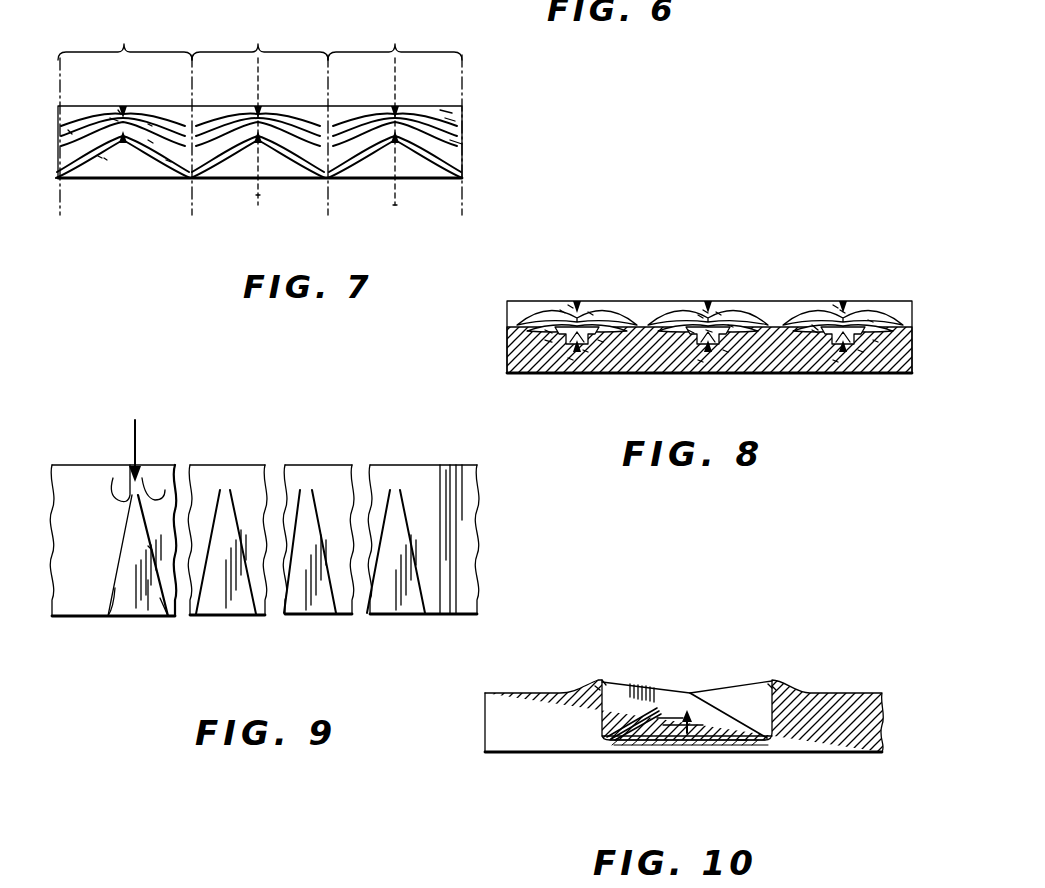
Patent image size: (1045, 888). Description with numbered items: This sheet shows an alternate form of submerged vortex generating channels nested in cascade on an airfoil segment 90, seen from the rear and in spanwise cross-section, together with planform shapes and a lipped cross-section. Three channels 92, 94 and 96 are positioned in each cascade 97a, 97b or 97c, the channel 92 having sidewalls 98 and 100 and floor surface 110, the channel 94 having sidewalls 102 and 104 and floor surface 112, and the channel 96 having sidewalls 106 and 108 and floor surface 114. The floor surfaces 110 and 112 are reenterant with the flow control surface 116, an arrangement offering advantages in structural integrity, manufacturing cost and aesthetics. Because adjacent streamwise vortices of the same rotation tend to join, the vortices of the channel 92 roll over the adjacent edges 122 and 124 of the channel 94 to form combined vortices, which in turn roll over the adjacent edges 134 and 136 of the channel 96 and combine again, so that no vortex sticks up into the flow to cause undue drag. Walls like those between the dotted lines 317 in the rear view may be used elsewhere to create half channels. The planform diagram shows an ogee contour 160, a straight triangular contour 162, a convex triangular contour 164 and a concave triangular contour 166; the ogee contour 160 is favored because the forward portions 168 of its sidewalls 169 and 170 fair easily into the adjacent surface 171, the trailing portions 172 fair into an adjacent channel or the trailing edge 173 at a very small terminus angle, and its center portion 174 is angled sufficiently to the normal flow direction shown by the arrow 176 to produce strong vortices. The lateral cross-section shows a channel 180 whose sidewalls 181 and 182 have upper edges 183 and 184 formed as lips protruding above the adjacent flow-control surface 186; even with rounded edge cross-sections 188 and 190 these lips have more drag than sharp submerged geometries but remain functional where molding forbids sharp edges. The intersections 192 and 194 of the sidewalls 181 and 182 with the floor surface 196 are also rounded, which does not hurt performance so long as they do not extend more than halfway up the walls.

In FIG. 7, the airfoil segment 90 is at (445, 110).
In FIG. 7, the channel 92 is at (124, 106).
In FIG. 8, the channel 92 is at (578, 300).
In FIG. 7, the channel 94 is at (128, 142).
In FIG. 8, the channel 94 is at (562, 310).
In FIG. 7, the channel 96 is at (122, 178).
In FIG. 8, the channel 96 is at (575, 362).
In FIG. 7, the cascade 97a is at (125, 38).
In FIG. 7, the cascade 97b is at (260, 38).
In FIG. 7, the cascade 97c is at (395, 37).
In FIG. 7, the sidewall 98 is at (118, 117).
In FIG. 8, the sidewall 98 is at (548, 330).
In FIG. 7, the sidewall 100 is at (175, 88).
In FIG. 8, the sidewall 100 is at (590, 312).
In FIG. 8, the sidewall 102 is at (565, 352).
In FIG. 7, the sidewall 104 is at (150, 140).
In FIG. 8, the sidewall 104 is at (600, 340).
In FIG. 7, the sidewall 106 is at (100, 155).
In FIG. 8, the sidewall 106 is at (570, 358).
In FIG. 7, the sidewall 108 is at (168, 160).
In FIG. 8, the sidewall 108 is at (585, 350).
In FIG. 7, the floor surface 110 is at (121, 108).
In FIG. 8, the floor surface 110 is at (570, 305).
In FIG. 7, the floor surface 112 is at (70, 130).
In FIG. 7, the floor surface 114 is at (105, 158).
In FIG. 7, the flow control surface 116 is at (452, 112).
In FIG. 7, the adjacent edge 122 is at (455, 120).
In FIG. 7, the adjacent edge 124 is at (378, 88).
In FIG. 8, the adjacent edge 124 is at (548, 340).
In FIG. 7, the adjacent edge 134 is at (328, 178).
In FIG. 7, the adjacent edge 136 is at (462, 143).
In FIG. 9, the ogee contour 160 is at (178, 470).
In FIG. 9, the straight triangular contour 162 is at (230, 505).
In FIG. 9, the convex triangular contour 164 is at (318, 505).
In FIG. 9, the concave triangular contour 166 is at (385, 500).
In FIG. 9, the forward portions 168 is at (145, 444).
In FIG. 9, the sidewall 169 is at (115, 588).
In FIG. 9, the sidewall 170 is at (150, 548).
In FIG. 9, the adjacent surface 171 is at (94, 518).
In FIG. 9, the trailing portions 172 is at (110, 615).
In FIG. 9, the trailing edge 173 is at (110, 616).
In FIG. 9, the center portion 174 is at (124, 614).
In FIG. 9, the arrow 176 is at (135, 428).
In FIG. 10, the channel 180 is at (687, 733).
In FIG. 10, the sidewall 181 is at (612, 692).
In FIG. 10, the sidewall 182 is at (742, 702).
In FIG. 10, the upper edge 183 is at (605, 683).
In FIG. 10, the upper edge 184 is at (770, 690).
In FIG. 10, the flow-control surface 186 is at (813, 692).
In FIG. 10, the rounded edge cross-section 188 is at (600, 690).
In FIG. 10, the rounded edge cross-section 190 is at (772, 690).
In FIG. 10, the intersection 192 is at (645, 740).
In FIG. 10, the intersection 194 is at (742, 740).
In FIG. 10, the floor surface 196 is at (660, 745).
In FIG. 7, the dotted lines 317 is at (258, 195).